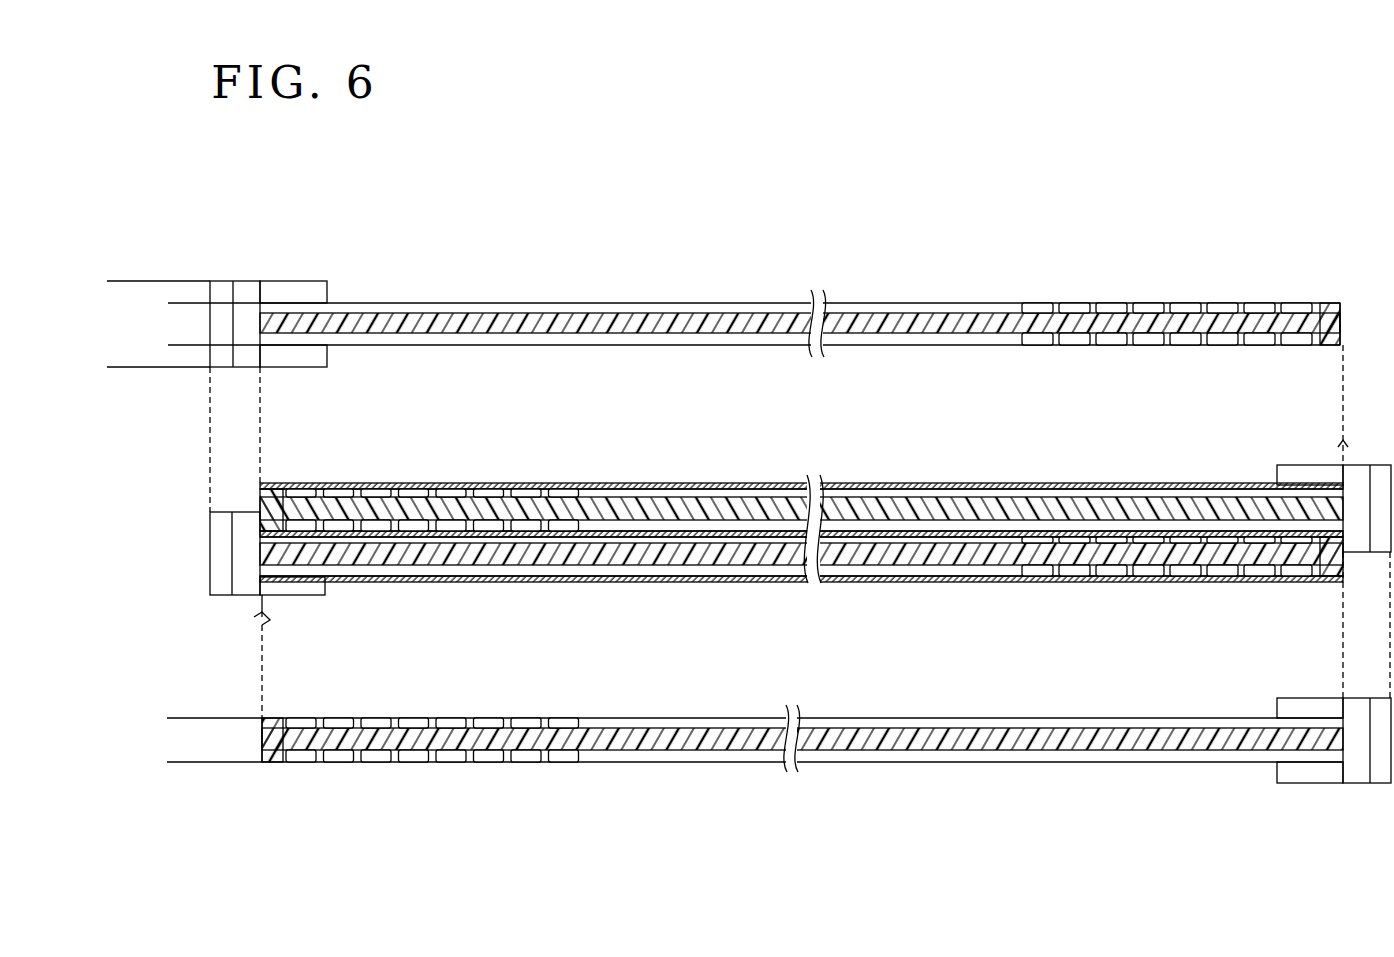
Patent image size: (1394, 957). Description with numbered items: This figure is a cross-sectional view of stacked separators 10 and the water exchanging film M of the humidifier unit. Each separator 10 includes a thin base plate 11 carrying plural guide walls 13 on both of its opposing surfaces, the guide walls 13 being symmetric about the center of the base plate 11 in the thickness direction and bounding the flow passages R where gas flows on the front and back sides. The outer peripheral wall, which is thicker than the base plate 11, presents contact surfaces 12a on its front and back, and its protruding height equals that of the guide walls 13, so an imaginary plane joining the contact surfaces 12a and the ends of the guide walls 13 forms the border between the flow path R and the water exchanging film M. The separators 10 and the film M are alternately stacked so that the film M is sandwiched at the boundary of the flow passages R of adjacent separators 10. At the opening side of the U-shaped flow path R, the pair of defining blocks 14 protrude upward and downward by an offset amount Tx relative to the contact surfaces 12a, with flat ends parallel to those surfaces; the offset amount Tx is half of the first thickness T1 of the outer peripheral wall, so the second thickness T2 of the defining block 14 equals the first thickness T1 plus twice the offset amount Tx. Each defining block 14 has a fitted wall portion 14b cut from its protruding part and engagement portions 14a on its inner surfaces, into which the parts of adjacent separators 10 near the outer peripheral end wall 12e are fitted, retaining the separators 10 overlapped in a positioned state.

The separator 10 is at (734, 521).
The base plate 11 is at (702, 301).
The contact surface 12a is at (490, 301).
The outer peripheral end wall 12e is at (1337, 302).
The guide wall 13 is at (1035, 302).
The defining block 14 is at (770, 521).
The engagement portion 14a is at (289, 300).
The fitted wall portion 14b is at (223, 295).
The flow passage R is at (785, 303).
The water exchanging film M is at (937, 482).
The first thickness T1 is at (180, 304).
The second thickness T2 is at (115, 282).
The offset amount Tx is at (176, 296).